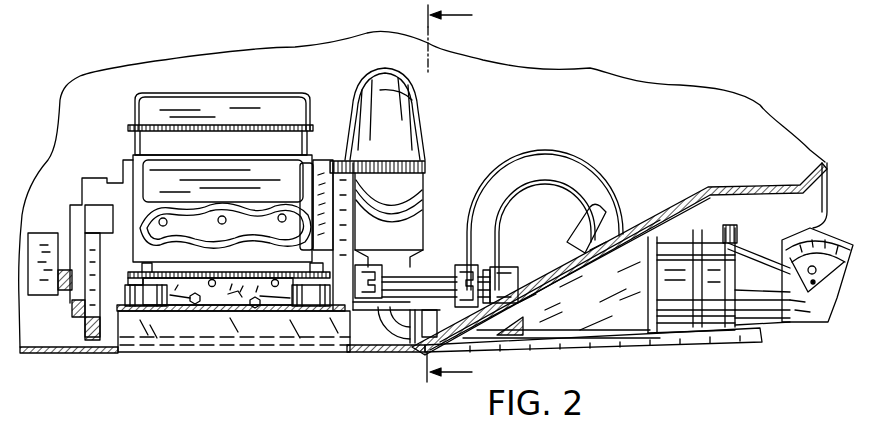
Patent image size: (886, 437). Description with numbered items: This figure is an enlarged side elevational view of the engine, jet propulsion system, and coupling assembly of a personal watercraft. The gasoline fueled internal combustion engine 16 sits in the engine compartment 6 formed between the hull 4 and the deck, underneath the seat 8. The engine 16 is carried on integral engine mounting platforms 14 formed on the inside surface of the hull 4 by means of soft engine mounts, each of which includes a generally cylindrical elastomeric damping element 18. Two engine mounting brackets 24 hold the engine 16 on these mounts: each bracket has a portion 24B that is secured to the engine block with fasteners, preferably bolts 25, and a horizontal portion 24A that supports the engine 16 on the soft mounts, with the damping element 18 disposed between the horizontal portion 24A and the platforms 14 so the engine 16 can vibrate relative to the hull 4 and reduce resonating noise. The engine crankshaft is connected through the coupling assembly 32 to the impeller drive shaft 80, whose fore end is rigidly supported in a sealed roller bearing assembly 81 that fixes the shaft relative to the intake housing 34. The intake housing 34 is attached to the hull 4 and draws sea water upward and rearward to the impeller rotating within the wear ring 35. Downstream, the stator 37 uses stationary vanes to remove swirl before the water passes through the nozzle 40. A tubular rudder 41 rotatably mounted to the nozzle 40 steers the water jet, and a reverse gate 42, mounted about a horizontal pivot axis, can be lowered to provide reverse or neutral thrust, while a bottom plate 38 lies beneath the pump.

The hull 4 is at (55, 357).
The engine compartment 6 is at (76, 112).
The seat 8 is at (440, 193).
The engine mounting platforms 14 is at (175, 311).
The internal combustion engine 16 is at (203, 113).
The elastomeric damping element 18 is at (143, 297).
The engine mounting brackets 24 is at (212, 293).
The horizontal portion of engine mounting bracket 24A is at (233, 297).
The engine block portion of engine mounting bracket 24B is at (257, 305).
The fastener 25 is at (195, 303).
The coupling assembly 32 is at (425, 265).
The intake housing 34 is at (615, 320).
The wear ring 35 is at (719, 195).
The stator 37 is at (713, 235).
The bottom plate 38 is at (713, 343).
The nozzle 40 is at (780, 323).
The tubular rudder 41 is at (813, 307).
The reverse gate 42 is at (833, 253).
The impeller drive shaft 80 is at (477, 266).
The sealed roller bearing assembly 81 is at (510, 270).